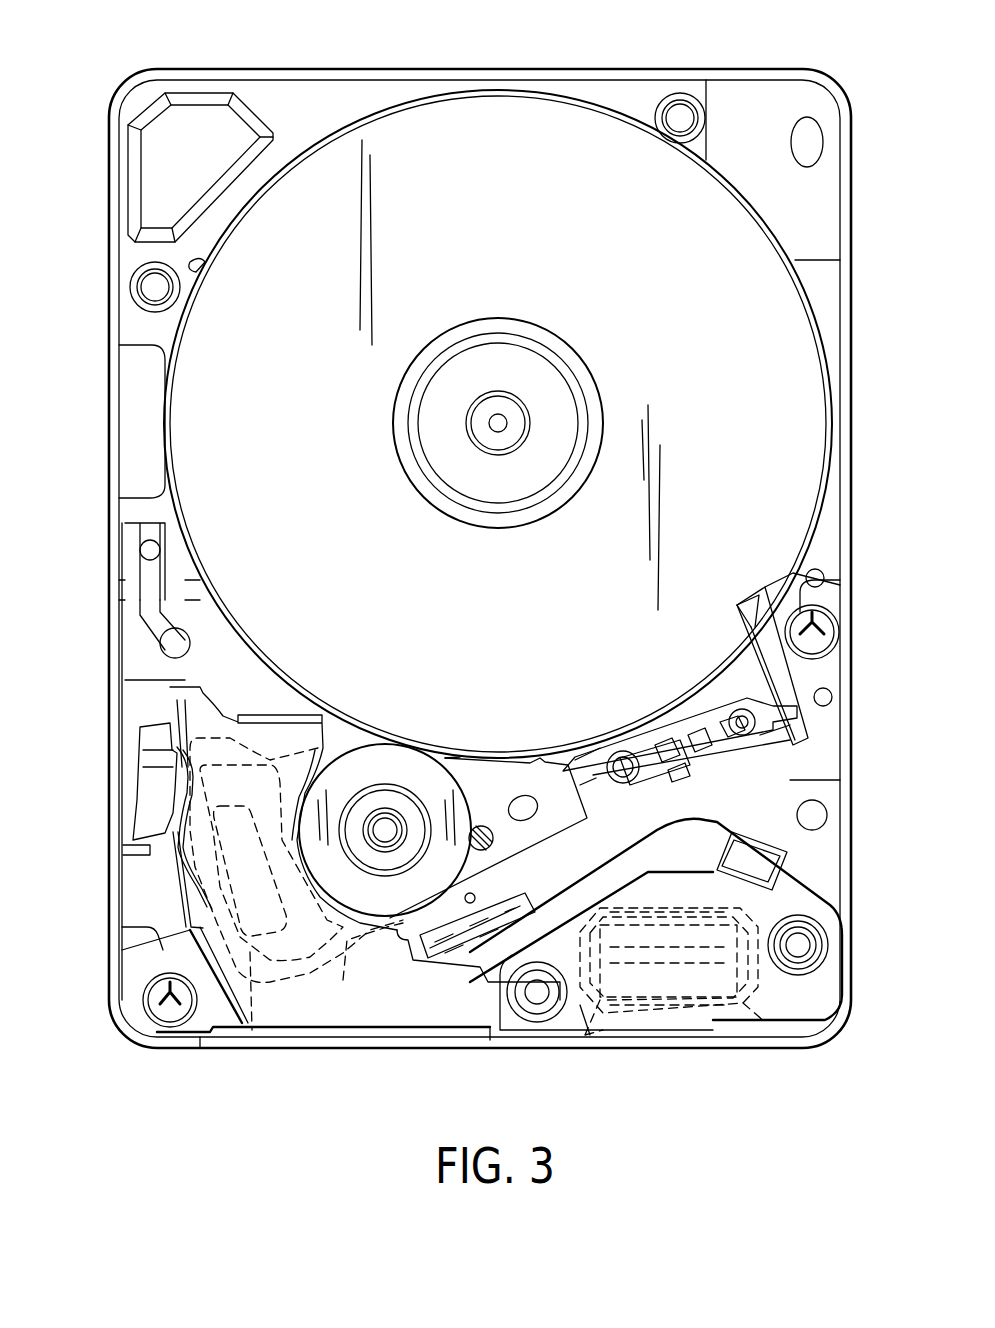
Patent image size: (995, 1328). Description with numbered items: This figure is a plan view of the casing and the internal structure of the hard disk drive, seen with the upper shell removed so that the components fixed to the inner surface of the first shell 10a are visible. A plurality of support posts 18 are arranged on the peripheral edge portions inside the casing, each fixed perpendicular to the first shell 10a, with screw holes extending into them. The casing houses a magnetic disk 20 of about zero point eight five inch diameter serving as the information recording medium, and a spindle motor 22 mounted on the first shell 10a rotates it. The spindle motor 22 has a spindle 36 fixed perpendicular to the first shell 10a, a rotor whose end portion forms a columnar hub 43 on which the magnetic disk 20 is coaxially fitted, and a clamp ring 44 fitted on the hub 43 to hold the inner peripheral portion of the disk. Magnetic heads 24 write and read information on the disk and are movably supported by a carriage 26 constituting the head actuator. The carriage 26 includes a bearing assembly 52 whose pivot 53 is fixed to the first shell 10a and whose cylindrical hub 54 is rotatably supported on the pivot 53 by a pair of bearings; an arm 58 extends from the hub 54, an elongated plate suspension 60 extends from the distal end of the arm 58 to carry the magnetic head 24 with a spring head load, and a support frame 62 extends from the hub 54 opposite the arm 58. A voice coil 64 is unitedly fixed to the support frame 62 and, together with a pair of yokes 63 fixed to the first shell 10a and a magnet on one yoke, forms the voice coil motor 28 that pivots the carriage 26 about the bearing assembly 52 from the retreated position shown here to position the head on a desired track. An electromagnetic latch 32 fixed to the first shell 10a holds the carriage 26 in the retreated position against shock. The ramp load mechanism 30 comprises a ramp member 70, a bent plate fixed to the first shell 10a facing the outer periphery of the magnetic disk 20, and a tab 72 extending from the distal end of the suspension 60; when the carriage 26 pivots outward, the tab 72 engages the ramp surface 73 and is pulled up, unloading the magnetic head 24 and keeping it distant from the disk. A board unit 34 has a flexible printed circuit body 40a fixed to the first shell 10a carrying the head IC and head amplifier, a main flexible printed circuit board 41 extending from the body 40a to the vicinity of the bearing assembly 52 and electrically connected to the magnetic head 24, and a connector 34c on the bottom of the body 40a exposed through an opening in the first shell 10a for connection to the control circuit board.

The first shell 10a is at (320, 98).
The support posts 18 is at (680, 115).
The magnetic disk 20 is at (810, 355).
The spindle motor 22 is at (548, 310).
The magnetic heads 24 is at (740, 700).
The carriage 26 is at (488, 775).
The voice coil motor 28 is at (289, 993).
The ramp load mechanism 30 is at (830, 673).
The electromagnetic latch 32 is at (152, 792).
The board unit 34 is at (685, 1028).
The connector 34c is at (760, 1010).
The spindle 36 is at (495, 425).
The body 40a is at (582, 1010).
The main flexible printed circuit board 41 is at (598, 890).
The hub 43 is at (468, 365).
The clamp ring 44 is at (585, 380).
The bearing assembly 52 is at (386, 785).
The pivot 53 is at (392, 822).
The cylindrical hub 54 is at (372, 770).
The arm 58 is at (525, 772).
The suspension 60 is at (640, 762).
The support frame 62 is at (370, 964).
The yokes 63 is at (390, 1010).
The voice coil 64 is at (250, 1030).
The ramp member 70 is at (768, 592).
The tab 72 is at (776, 752).
The ramp surface 73 is at (738, 608).